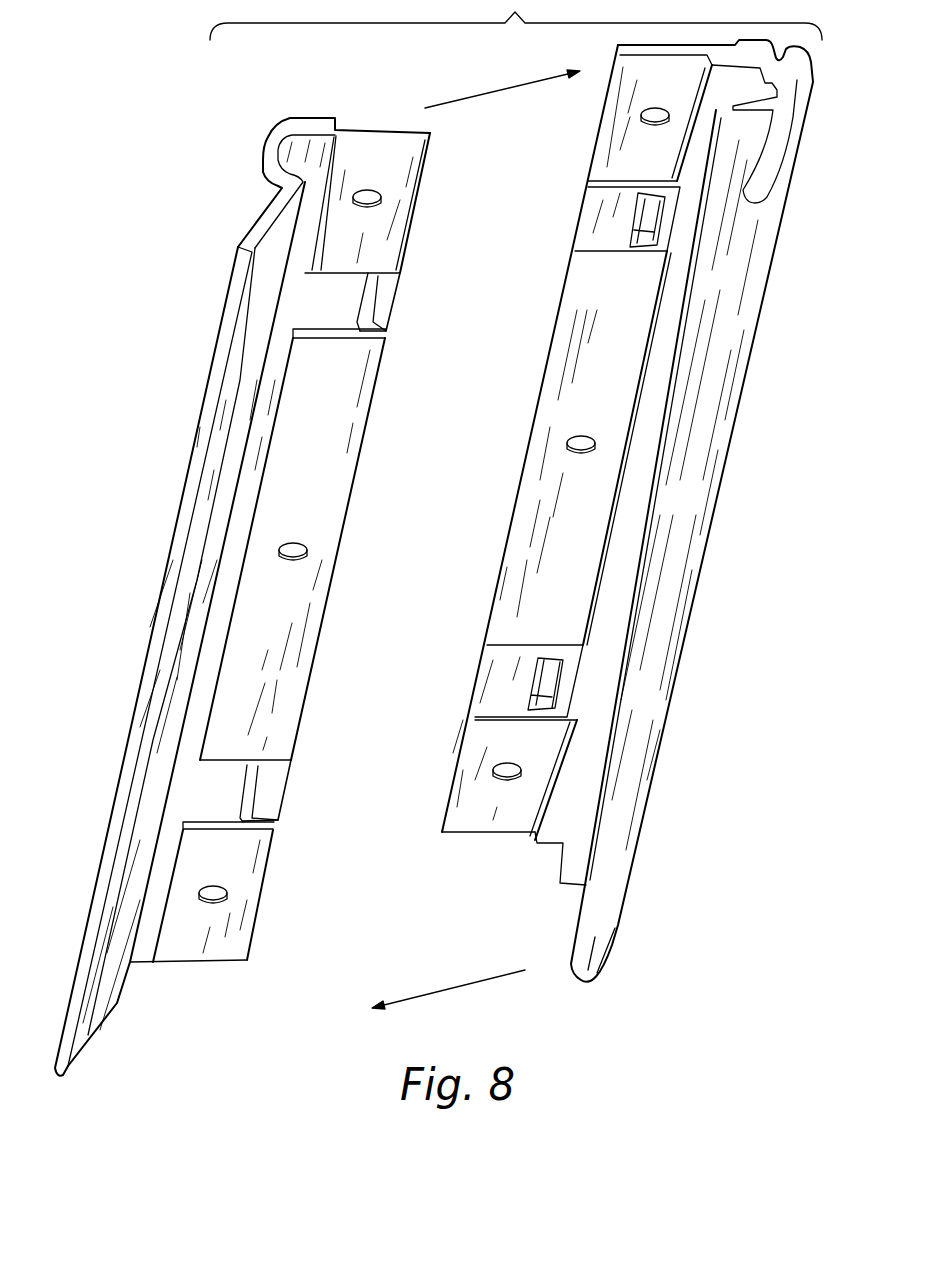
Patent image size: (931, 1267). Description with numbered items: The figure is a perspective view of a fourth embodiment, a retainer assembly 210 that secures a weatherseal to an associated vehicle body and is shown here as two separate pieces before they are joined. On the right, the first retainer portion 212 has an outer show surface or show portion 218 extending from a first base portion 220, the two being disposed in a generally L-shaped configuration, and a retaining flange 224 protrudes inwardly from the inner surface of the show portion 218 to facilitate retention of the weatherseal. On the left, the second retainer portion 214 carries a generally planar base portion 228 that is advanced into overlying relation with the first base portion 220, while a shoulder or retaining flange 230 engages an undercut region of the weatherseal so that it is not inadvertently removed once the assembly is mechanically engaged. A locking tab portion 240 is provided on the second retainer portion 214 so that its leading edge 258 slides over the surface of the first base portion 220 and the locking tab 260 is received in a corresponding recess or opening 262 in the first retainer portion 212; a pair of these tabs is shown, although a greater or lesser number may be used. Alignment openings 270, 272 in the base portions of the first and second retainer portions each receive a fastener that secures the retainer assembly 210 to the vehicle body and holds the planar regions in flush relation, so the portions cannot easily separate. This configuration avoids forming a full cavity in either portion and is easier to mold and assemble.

The retainer assembly 210 is at (160, 490).
The first retainer portion 212 is at (700, 642).
The second retainer portion 214 is at (310, 478).
The show portion 218 is at (720, 440).
The first base portion 220 is at (540, 485).
The retaining flange 224 is at (582, 878).
The base portion 228 is at (395, 230).
The shoulder or retaining flange 230 is at (272, 187).
The locking tab portion 240 is at (325, 300).
The leading edge 258 is at (405, 293).
The locking tab 260 is at (376, 308).
The recess or opening 262 is at (648, 212).
The alignment opening 270 is at (652, 115).
The alignment opening 272 is at (375, 197).